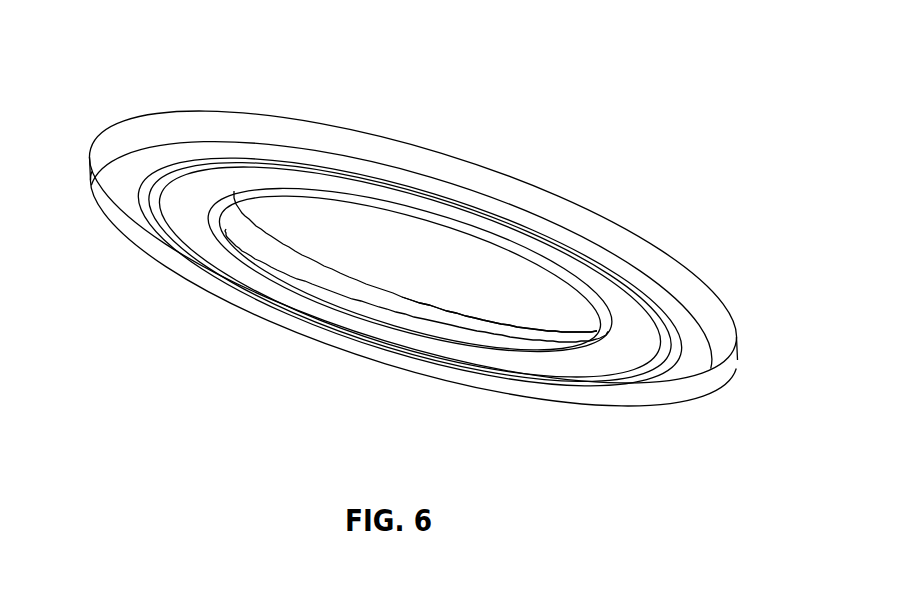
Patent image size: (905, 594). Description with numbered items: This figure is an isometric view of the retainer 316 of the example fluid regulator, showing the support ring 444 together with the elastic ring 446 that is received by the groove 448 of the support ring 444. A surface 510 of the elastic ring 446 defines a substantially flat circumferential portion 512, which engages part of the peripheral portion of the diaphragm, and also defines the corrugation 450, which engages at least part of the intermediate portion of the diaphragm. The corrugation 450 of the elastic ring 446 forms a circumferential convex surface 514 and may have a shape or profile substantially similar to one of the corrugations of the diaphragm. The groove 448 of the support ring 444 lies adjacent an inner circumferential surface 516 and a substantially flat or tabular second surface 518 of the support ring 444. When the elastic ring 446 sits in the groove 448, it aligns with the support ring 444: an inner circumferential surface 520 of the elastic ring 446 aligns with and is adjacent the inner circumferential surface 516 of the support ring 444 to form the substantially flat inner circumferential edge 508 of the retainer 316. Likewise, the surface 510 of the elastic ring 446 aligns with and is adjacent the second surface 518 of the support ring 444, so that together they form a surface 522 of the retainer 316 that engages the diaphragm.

The retainer 316 is at (593, 127).
The support ring 444 is at (128, 112).
The elastic ring 446 is at (225, 258).
The groove 448 is at (184, 216).
The corrugation 450 is at (587, 362).
The inner circumferential edge 508 is at (542, 317).
The surface 510 is at (360, 325).
The substantially flat circumferential portion 512 is at (668, 353).
The circumferential convex surface 514 is at (623, 347).
The inner circumferential surface 516 is at (247, 230).
The second surface 518 is at (112, 195).
The inner circumferential surface 520 is at (283, 277).
The surface 522 is at (262, 314).